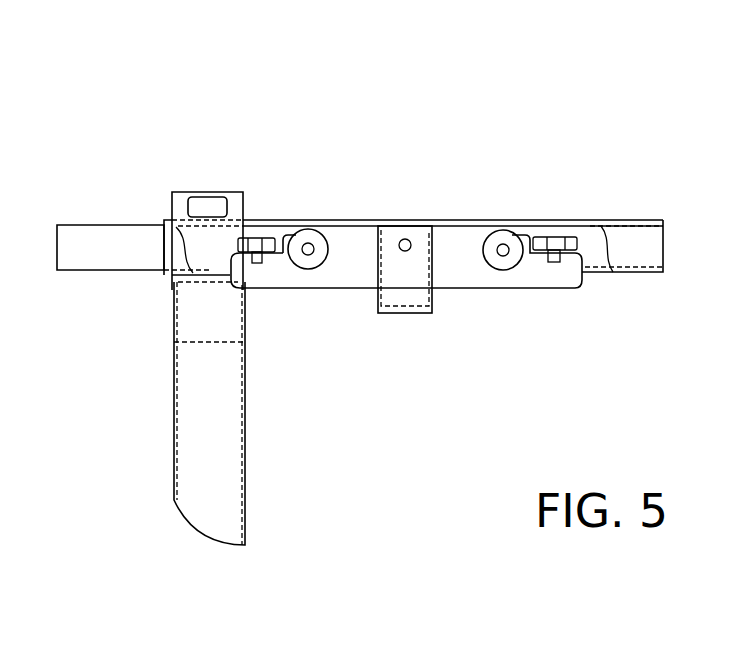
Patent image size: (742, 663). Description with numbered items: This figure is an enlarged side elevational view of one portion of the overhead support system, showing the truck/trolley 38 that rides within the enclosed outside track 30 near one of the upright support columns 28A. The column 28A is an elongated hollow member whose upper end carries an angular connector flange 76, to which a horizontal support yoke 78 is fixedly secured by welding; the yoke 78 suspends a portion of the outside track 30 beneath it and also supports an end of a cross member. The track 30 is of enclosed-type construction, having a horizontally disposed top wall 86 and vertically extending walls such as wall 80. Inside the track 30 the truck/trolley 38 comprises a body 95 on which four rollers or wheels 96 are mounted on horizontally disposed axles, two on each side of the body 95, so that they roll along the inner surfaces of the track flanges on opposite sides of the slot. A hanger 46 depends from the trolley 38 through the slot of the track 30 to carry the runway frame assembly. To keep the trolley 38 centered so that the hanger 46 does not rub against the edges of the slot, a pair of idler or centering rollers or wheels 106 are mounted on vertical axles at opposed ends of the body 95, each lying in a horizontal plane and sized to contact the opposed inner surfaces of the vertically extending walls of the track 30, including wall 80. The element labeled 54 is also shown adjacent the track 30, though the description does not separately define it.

The upright support column 28A is at (280, 468).
The outside track 30 is at (643, 243).
The truck/trolley 38 is at (458, 245).
The hanger 46 is at (405, 315).
The tubular arm 54 is at (112, 272).
The angular connector flange 76 is at (243, 193).
The horizontal support yoke 78 is at (202, 197).
The vertically extending wall 80 is at (172, 194).
The top wall 86 is at (422, 220).
The body 95 is at (461, 290).
The rollers or wheels 96 is at (310, 270).
The idler or centering rollers or wheels 106 is at (280, 233).